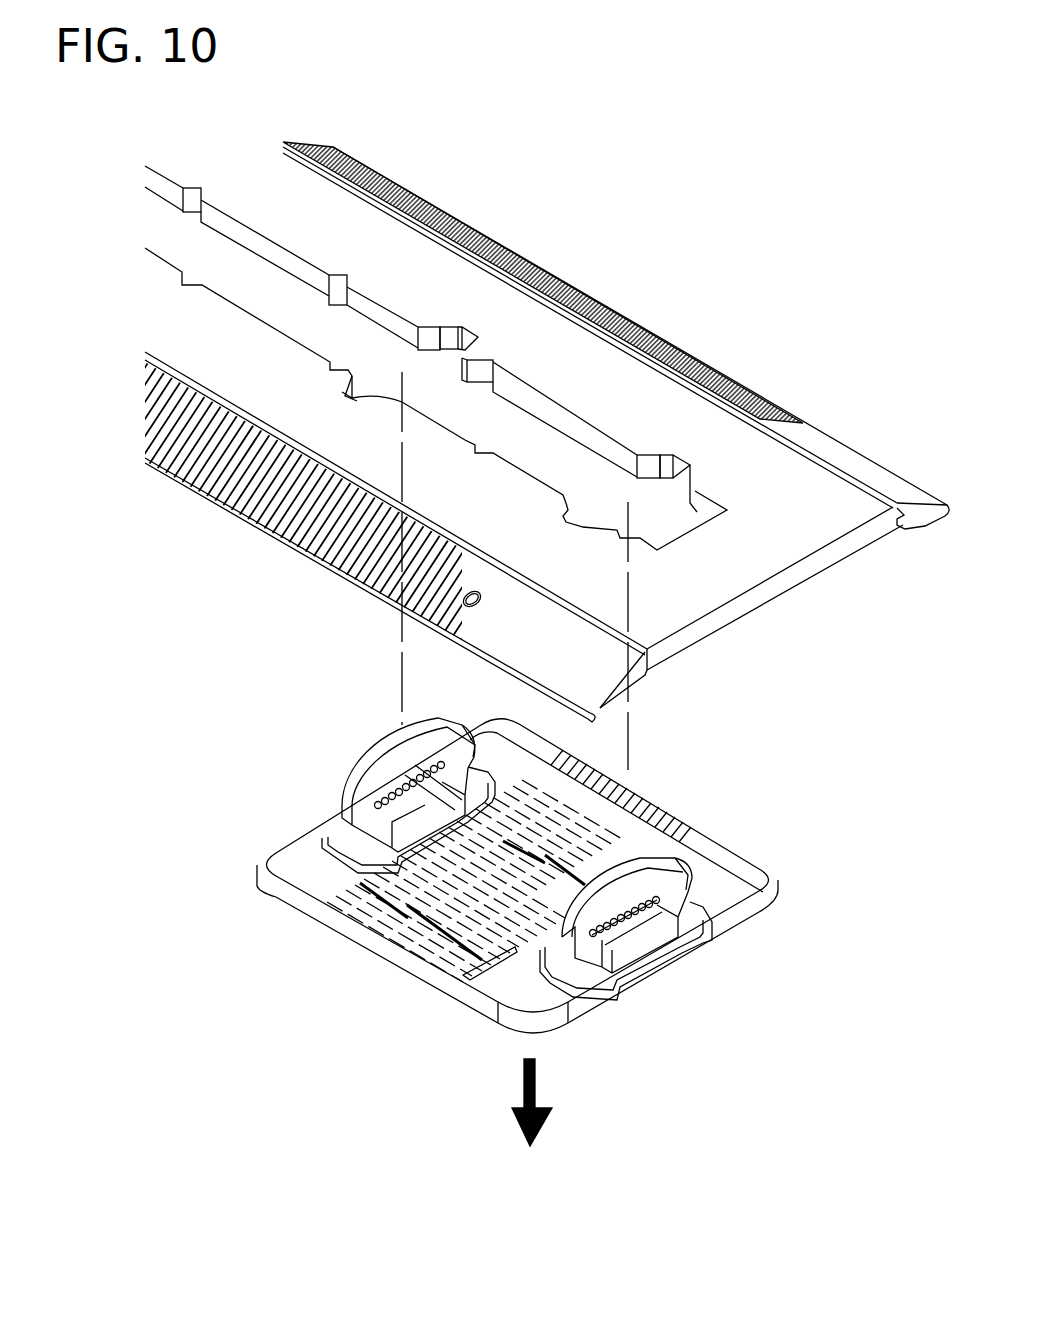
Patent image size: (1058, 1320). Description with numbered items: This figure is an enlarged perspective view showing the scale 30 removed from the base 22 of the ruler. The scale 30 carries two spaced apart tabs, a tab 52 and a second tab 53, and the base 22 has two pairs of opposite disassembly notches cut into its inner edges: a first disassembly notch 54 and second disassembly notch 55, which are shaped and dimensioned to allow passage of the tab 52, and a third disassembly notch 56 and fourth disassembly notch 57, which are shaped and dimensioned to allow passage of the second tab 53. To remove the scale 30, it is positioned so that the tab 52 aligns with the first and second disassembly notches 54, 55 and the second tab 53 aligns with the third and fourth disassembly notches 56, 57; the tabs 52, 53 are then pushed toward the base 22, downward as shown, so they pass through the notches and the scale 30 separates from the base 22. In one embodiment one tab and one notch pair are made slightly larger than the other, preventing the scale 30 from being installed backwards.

The base 22 is at (860, 452).
The scale 30 is at (517, 868).
The tab 52 is at (717, 838).
The second tab 53 is at (360, 762).
The first disassembly notch 54 is at (577, 513).
The second disassembly notch 55 is at (690, 473).
The third disassembly notch 56 is at (368, 390).
The fourth disassembly notch 57 is at (450, 355).